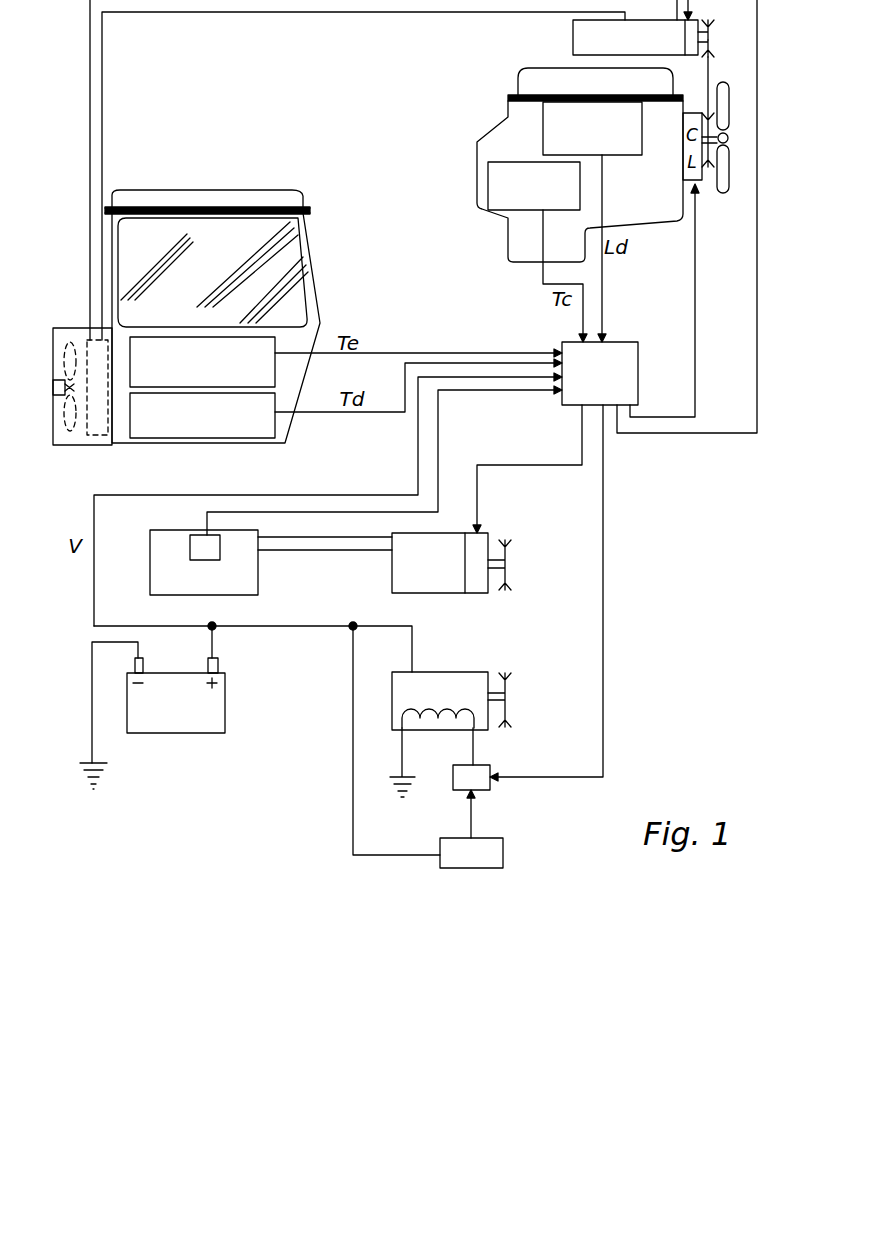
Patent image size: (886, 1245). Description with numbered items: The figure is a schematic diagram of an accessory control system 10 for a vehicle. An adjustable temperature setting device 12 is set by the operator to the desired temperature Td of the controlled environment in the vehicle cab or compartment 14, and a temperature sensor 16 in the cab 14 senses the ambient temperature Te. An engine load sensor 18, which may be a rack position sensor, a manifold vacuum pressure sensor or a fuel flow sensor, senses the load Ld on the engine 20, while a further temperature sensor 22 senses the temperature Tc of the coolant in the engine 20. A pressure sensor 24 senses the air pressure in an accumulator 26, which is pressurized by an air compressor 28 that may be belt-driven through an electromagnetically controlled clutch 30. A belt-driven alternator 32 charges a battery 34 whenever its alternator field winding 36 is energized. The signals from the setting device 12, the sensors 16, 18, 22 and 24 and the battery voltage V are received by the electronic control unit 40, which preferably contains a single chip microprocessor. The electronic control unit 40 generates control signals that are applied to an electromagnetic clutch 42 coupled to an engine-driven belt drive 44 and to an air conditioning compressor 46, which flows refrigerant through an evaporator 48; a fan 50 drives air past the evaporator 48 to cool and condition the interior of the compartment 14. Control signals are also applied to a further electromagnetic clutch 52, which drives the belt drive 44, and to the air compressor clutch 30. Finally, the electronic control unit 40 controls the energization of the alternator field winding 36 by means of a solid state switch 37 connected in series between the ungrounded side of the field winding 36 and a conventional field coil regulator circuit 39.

The control system 10 is at (641, 473).
The adjustable temperature setting device 12 is at (255, 440).
The vehicle cab 14 is at (253, 197).
The temperature sensor 16 is at (172, 337).
The engine load sensor 18 is at (543, 136).
The engine 20 is at (520, 70).
The temperature sensor 22 is at (488, 180).
The pressure sensor 24 is at (190, 548).
The accumulator 26 is at (258, 575).
The air compressor 28 is at (448, 595).
The electromagnetically controlled clutch 30 is at (488, 535).
The alternator 32 is at (462, 672).
The battery 34 is at (225, 697).
The alternator field winding 36 is at (442, 728).
The solid state switch 37 is at (490, 766).
The field coil regulator circuit 39 is at (503, 850).
The electronic control unit 40 is at (565, 340).
The electromagnetic clutch 42 is at (712, 60).
The belt drive 44 is at (712, 20).
The air conditioning compressor 46 is at (573, 32).
The evaporator 48 is at (95, 437).
The fan 50 is at (77, 447).
The electromagnetic clutch 52 is at (702, 182).